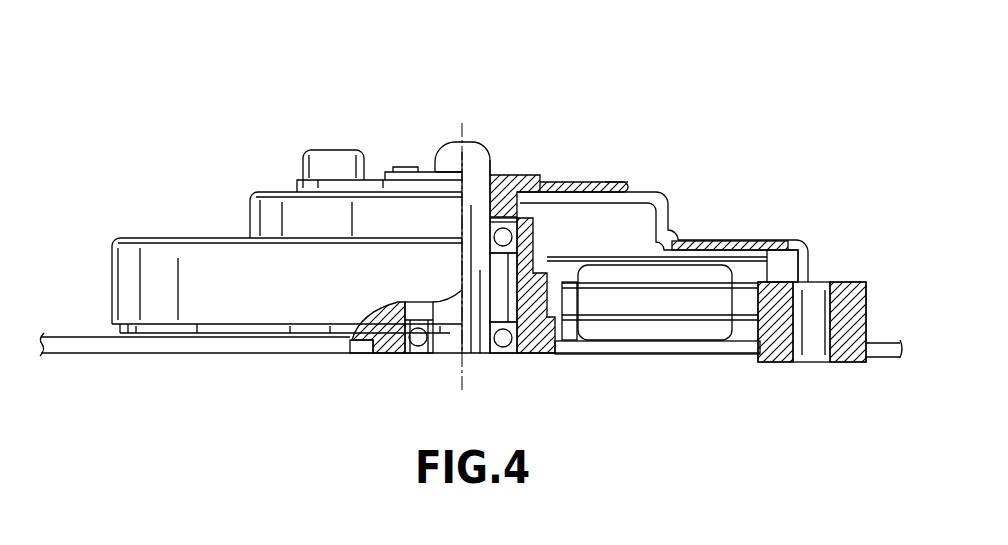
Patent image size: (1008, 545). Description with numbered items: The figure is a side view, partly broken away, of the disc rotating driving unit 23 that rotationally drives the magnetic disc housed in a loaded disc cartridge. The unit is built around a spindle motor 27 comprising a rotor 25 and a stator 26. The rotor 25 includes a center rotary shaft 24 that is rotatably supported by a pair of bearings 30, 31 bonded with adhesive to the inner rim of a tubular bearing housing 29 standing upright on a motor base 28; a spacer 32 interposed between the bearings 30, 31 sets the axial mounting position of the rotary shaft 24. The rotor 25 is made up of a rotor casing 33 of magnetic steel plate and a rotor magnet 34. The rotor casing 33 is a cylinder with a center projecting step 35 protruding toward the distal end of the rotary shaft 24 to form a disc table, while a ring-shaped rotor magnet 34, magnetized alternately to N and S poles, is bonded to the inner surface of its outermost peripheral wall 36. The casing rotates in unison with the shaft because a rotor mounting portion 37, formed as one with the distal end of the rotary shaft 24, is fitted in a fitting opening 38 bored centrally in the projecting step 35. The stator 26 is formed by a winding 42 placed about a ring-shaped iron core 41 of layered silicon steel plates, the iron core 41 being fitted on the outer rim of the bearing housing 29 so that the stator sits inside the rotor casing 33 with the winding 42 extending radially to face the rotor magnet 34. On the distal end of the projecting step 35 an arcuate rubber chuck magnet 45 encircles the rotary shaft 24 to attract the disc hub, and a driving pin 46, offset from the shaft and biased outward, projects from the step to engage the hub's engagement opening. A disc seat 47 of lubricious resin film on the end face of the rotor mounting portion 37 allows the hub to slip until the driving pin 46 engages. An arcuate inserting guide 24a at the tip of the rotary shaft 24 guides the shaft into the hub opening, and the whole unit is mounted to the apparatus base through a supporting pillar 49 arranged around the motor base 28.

The disc rotating driving unit 23 is at (364, 104).
The rotary shaft 24 is at (480, 158).
The inserting guide 24a is at (444, 165).
The rotor 25 is at (265, 212).
The stator 26 is at (596, 342).
The spindle motor 27 is at (882, 345).
The motor base 28 is at (86, 352).
The bearing housing 29 is at (533, 353).
The bearing 30 is at (507, 237).
The bearing 31 is at (494, 353).
The spacer 32 is at (405, 304).
The rotor casing 33 is at (693, 238).
The rotor magnet 34 is at (782, 268).
The projecting step 35 is at (650, 192).
The outermost peripheral wall 36 is at (805, 282).
The rotor mounting portion 37 is at (508, 176).
The fitting opening 38 is at (558, 182).
The iron core 41 is at (687, 300).
The winding 42 is at (645, 341).
The chuck magnet 45 is at (612, 182).
The driving pin 46 is at (318, 150).
The disc seat 47 is at (408, 167).
The supporting pillar 49 is at (858, 292).